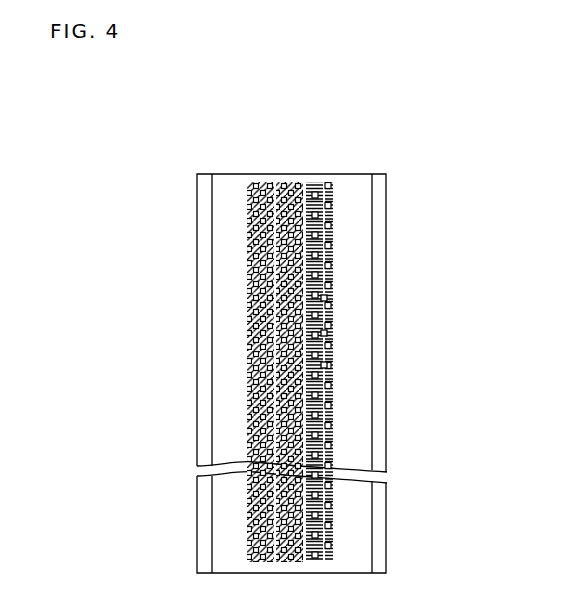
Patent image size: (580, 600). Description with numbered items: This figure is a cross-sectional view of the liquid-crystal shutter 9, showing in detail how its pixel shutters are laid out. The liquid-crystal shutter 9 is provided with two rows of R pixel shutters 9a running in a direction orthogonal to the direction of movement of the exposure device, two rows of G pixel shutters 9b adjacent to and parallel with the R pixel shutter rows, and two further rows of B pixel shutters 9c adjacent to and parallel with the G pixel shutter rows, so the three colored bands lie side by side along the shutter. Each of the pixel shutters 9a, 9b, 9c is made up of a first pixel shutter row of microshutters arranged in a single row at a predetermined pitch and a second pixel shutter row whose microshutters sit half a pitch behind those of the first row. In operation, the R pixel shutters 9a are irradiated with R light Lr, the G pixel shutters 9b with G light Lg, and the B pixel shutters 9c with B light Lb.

The liquid-crystal shutter 9 is at (232, 185).
The R pixel shutters 9a is at (258, 197).
The G pixel shutters 9b is at (285, 196).
The B pixel shutters 9c is at (305, 196).
The R light Lr is at (330, 298).
The G light Lg is at (330, 333).
The B light Lb is at (330, 365).